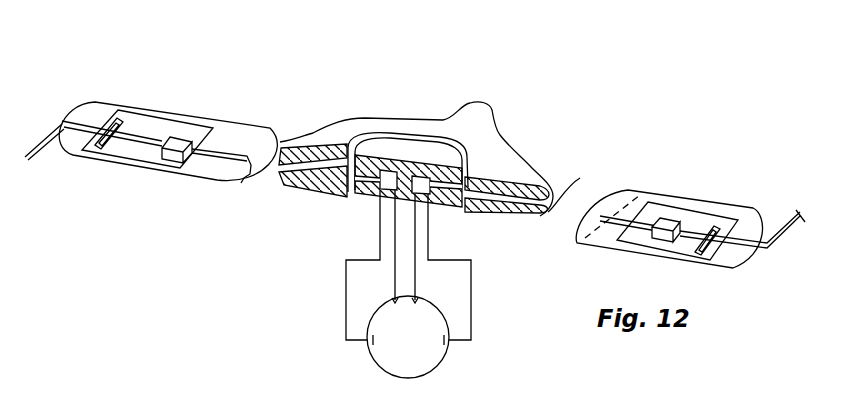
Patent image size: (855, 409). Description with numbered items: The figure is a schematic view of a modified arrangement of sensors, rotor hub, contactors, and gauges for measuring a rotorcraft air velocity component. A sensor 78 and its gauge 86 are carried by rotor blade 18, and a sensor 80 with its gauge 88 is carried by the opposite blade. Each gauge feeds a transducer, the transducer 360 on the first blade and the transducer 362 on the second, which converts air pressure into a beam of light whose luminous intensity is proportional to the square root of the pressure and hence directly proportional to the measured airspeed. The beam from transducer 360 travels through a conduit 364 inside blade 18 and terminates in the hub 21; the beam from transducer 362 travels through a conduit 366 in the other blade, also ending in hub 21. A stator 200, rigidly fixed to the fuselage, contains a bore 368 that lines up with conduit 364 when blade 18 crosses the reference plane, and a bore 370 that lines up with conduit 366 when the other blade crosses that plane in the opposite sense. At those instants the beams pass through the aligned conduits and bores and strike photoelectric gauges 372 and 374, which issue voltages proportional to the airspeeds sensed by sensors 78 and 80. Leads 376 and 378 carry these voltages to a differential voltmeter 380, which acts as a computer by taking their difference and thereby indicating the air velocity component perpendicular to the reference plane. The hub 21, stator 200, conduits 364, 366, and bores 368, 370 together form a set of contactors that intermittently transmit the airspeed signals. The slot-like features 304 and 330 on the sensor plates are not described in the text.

The rotor blade 18 is at (100, 101).
The slot 304 is at (120, 130).
The gauge 86 is at (199, 120).
The transducer 360 is at (187, 140).
The sensor 78 is at (42, 157).
The conduit 364 is at (243, 185).
The hub 21 is at (355, 132).
The stator 200 is at (403, 152).
The bore 368 is at (358, 198).
The bore 370 is at (427, 209).
The photoelectric-cell type gauge 372 is at (373, 190).
The photoelectric-type gauge 374 is at (436, 247).
The lead 376 is at (388, 291).
The lead 378 is at (418, 277).
The differential voltmeter 380 is at (385, 375).
The conduit 366 is at (592, 213).
The gauge 88 is at (663, 205).
The transducer 362 is at (672, 218).
The slot 330 is at (717, 230).
The sensor 80 is at (777, 247).